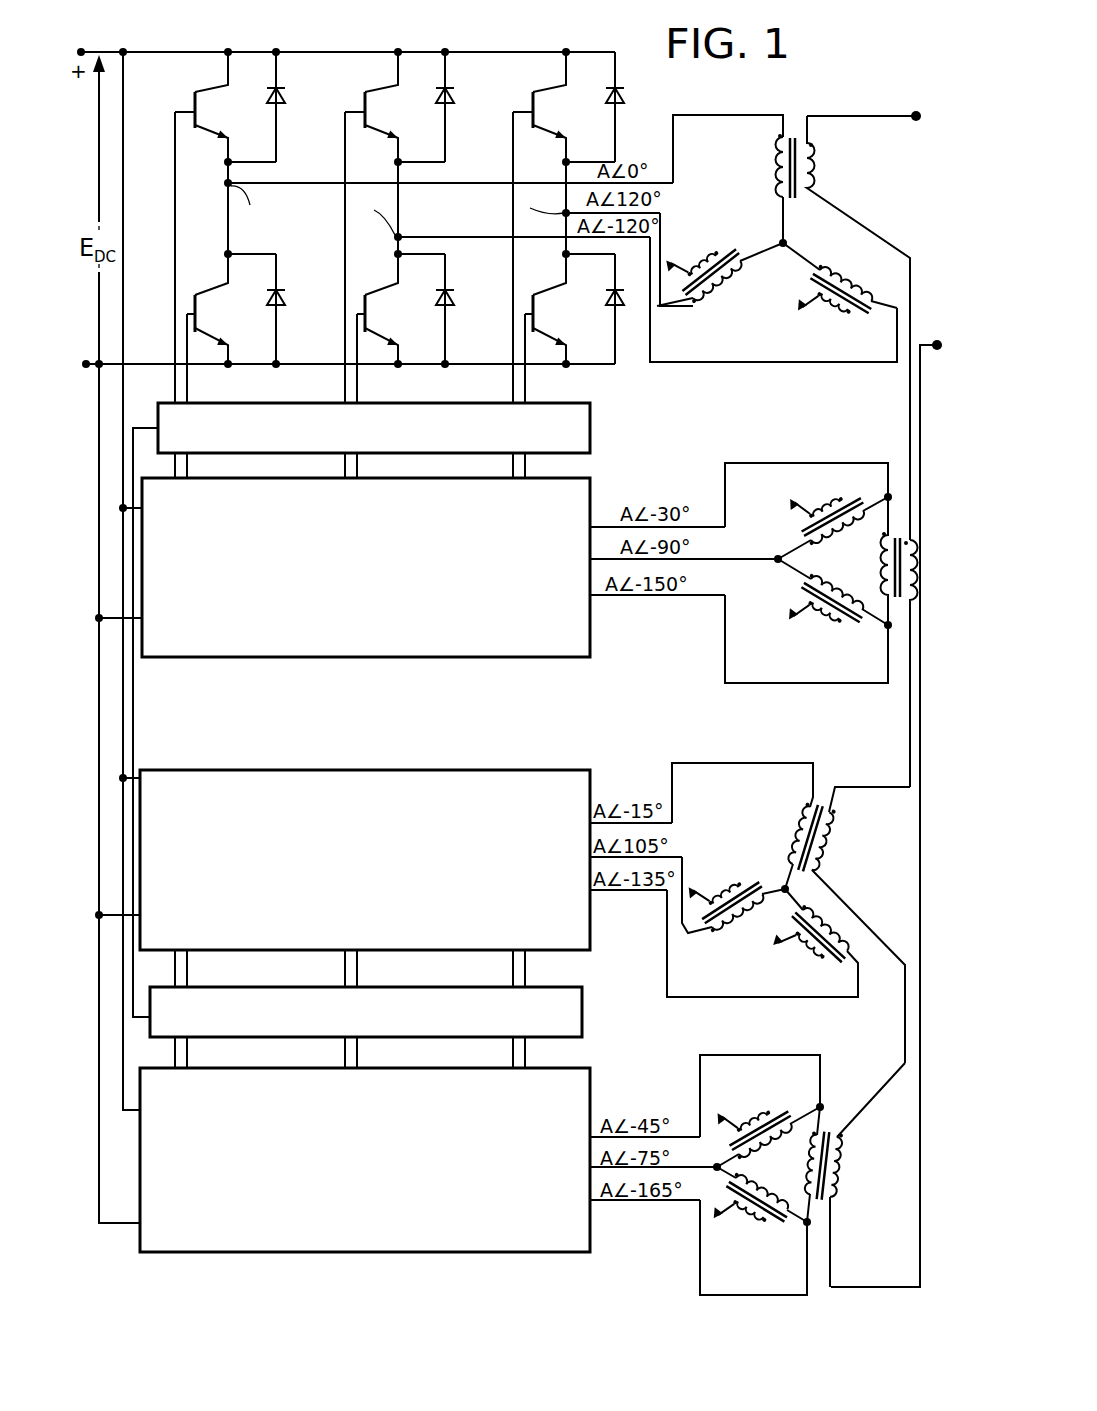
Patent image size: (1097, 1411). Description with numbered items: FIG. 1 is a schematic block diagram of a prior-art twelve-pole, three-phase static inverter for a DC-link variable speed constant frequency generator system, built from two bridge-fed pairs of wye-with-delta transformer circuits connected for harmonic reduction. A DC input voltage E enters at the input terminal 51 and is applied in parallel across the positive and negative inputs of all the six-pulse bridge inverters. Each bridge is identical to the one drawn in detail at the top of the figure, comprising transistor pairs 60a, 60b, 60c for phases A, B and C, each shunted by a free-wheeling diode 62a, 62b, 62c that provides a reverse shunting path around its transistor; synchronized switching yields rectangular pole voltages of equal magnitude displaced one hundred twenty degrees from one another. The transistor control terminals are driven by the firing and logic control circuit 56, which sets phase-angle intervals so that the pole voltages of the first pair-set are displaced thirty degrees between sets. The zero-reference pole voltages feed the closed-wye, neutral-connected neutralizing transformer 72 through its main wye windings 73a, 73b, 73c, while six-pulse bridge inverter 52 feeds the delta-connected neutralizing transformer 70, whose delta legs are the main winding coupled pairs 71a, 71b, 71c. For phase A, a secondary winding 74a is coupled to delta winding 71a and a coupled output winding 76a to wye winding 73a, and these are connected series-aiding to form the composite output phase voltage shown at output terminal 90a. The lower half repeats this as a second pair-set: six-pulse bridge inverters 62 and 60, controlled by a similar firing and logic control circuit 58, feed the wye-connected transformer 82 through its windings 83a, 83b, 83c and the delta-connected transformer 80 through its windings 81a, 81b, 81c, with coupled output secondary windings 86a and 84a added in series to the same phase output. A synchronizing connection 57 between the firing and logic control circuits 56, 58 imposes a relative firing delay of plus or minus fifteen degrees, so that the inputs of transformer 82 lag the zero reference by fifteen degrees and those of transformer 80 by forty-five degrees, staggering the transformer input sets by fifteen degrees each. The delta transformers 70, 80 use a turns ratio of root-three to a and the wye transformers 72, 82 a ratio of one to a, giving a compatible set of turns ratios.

The input terminal 51 is at (81, 52).
The six-pulse bridge inverter 52 is at (383, 358).
The firing and logic control circuit 56 is at (591, 423).
The synchronizing connection 57 is at (133, 695).
The firing and logic control circuit 58 is at (583, 1017).
The six-pulse bridge inverter 60 is at (394, 1292).
The six-pulse bridge inverter 62 is at (367, 752).
The phase A switching transistors 60a is at (214, 288).
The phase B switching transistors 60b is at (378, 92).
The phase C switching transistors 60c is at (551, 91).
The phase A freewheeling diodes 62a is at (285, 100).
The phase B freewheeling diodes 62b is at (455, 100).
The phase C freewheeling diodes 62c is at (607, 100).
The neutralizing transformer 70 is at (778, 464).
The delta leg main winding 71a is at (881, 563).
The delta leg main winding 71b is at (815, 588).
The delta leg main winding 71c is at (810, 533).
The closed-wye transformer 72 is at (720, 112).
The wye main winding 73a is at (779, 166).
The wye main winding 73b is at (820, 270).
The wye main winding 73c is at (748, 262).
The secondary winding 74a is at (912, 600).
The coupled output winding 76a is at (812, 168).
The neutralizing transformer 80 is at (745, 1042).
The primary winding of transformer 80 81a is at (828, 1133).
The primary winding of transformer 80 81b is at (735, 1192).
The primary winding of transformer 80 81c is at (785, 1120).
The wye connected transformer 82 is at (718, 752).
The primary winding of transformer 82 83a is at (805, 797).
The primary winding of transformer 82 83b is at (797, 912).
The primary winding of transformer 82 83c is at (765, 883).
The coupled output secondary winding 84a is at (840, 1180).
The coupled output secondary winding 86a is at (826, 843).
The output terminal (phase A voltage) 90a is at (916, 119).